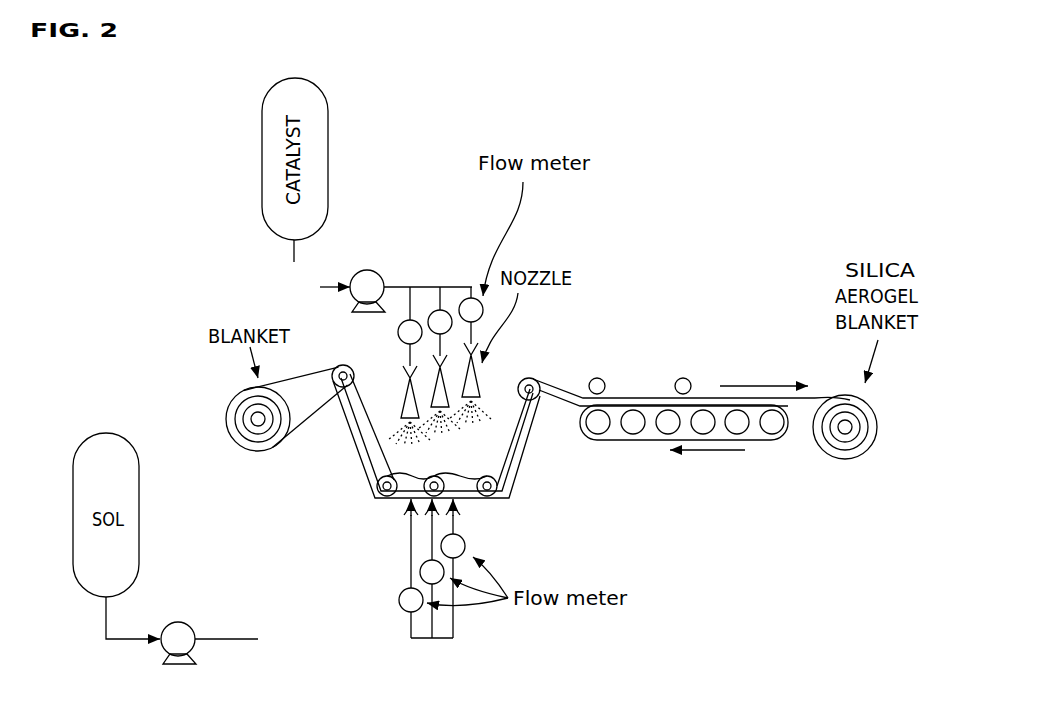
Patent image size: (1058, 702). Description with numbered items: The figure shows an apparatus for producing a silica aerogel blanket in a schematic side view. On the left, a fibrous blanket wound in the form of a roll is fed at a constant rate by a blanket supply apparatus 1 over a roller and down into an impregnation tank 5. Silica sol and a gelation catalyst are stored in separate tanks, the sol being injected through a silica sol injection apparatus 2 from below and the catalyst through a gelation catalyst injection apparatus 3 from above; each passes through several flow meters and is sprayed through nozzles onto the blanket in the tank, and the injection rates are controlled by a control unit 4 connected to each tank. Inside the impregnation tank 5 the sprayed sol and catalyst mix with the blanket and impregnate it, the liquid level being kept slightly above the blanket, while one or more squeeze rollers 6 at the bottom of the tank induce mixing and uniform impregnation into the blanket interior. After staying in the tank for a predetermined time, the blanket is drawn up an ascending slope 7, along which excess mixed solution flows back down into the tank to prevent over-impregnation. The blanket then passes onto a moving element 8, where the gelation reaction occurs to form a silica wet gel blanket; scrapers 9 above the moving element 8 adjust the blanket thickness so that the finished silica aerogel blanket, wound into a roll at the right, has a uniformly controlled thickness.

The blanket supply apparatus 1 is at (267, 434).
The silica sol injection apparatus 2 is at (354, 587).
The gelation catalyst injection apparatus 3 is at (271, 355).
The control unit 4 is at (187, 622).
The impregnation tank 5 is at (366, 471).
The squeeze roller 6 is at (395, 470).
The ascending slope 7 is at (518, 452).
The moving element 8 is at (610, 444).
The scraper 9 is at (682, 376).